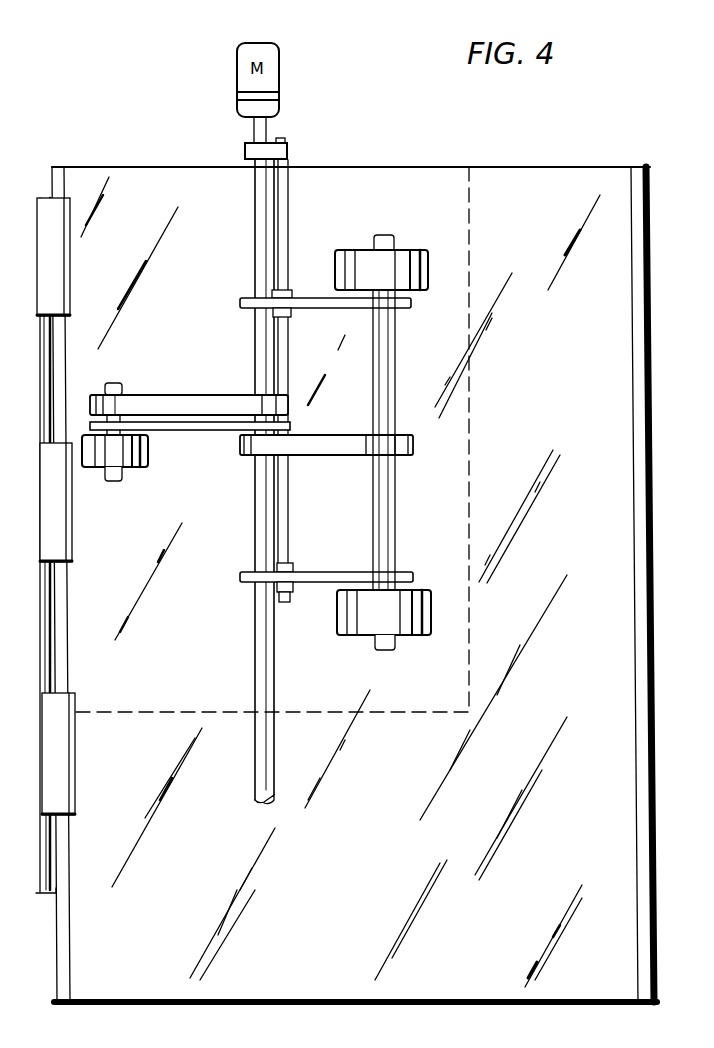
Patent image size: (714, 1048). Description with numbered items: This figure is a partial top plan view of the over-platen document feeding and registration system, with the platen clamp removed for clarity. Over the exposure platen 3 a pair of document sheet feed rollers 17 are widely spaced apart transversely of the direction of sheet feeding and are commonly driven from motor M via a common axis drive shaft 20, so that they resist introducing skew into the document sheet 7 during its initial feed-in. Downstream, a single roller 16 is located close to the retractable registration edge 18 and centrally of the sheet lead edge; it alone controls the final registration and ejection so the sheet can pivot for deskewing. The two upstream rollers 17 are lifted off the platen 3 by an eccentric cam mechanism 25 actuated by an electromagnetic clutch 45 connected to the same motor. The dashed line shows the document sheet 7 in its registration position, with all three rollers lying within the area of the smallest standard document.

The exposure platen 3 is at (92, 632).
The document sheet 7 is at (395, 713).
The single downstream roller 16 is at (148, 455).
The pair of document sheet feed rollers 17 is at (427, 249).
The retractable registration edge 18 is at (55, 273).
The common axis drive shaft 20 is at (262, 655).
The eccentric cam mechanism 25 is at (289, 312).
The electromagnetic clutch 45 is at (288, 156).